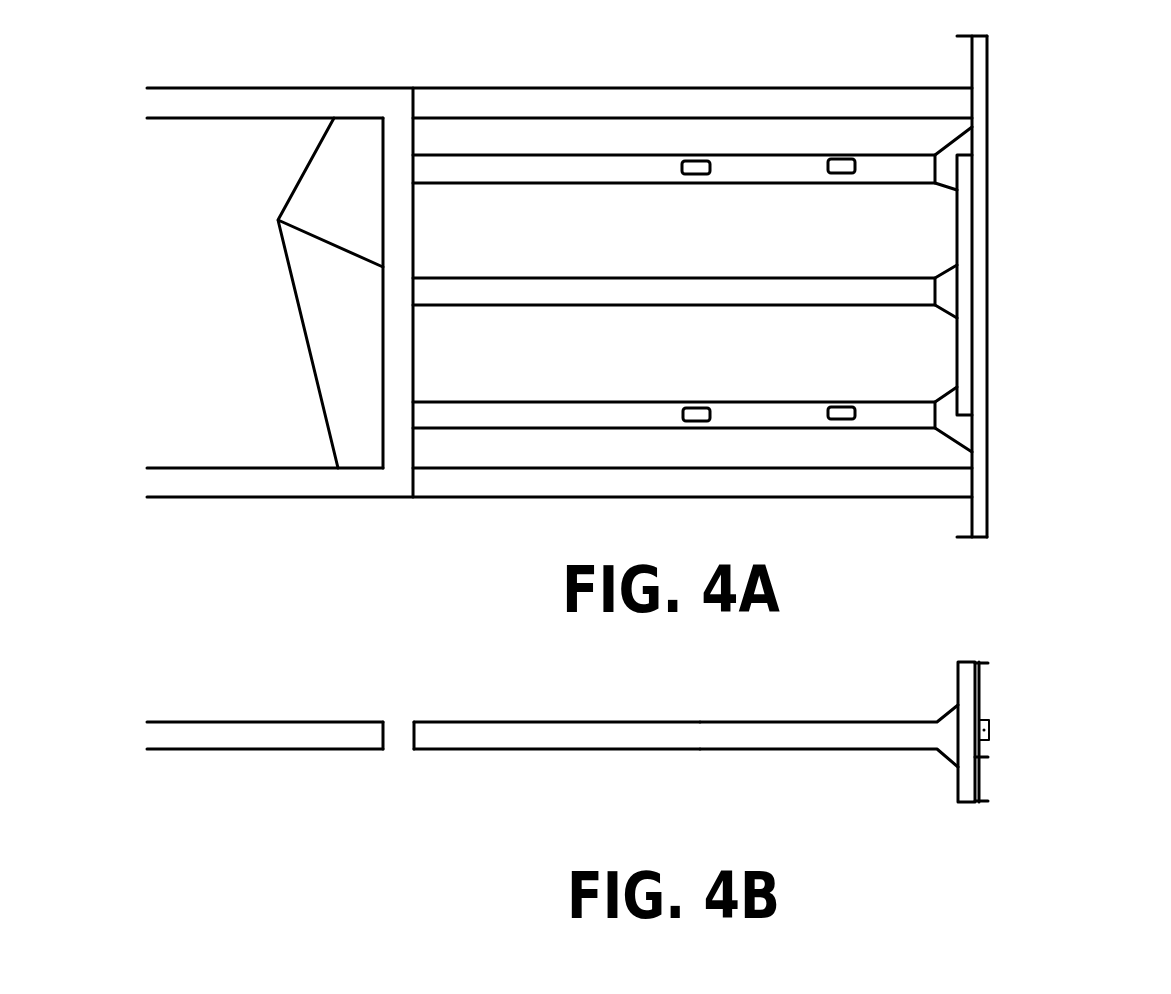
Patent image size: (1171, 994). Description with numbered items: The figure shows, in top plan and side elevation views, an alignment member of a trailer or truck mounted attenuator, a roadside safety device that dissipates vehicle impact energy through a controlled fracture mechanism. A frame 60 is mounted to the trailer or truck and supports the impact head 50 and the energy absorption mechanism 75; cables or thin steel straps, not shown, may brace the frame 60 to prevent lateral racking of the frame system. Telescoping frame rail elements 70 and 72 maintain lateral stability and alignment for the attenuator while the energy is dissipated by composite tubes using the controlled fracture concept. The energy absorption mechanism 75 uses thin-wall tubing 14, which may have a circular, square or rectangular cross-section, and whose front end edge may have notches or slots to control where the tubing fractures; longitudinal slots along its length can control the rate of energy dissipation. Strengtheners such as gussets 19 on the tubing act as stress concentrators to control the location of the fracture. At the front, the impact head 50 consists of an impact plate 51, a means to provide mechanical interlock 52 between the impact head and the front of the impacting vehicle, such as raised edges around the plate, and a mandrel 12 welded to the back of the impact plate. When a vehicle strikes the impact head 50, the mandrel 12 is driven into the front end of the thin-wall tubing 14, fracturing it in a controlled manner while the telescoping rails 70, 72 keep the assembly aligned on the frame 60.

In FIG. 4A, the mandrel 12 is at (953, 138).
In FIG. 4A, the thin-wall tubing 14 is at (602, 155).
In FIG. 4A, the gusset 19 is at (696, 175).
In FIG. 4A, the impact head 50 is at (990, 286).
In FIG. 4B, the impact head 50 is at (961, 712).
In FIG. 4A, the impact plate 51 is at (967, 230).
In FIG. 4B, the impact plate 51 is at (967, 778).
In FIG. 4A, the mechanical interlock means 52 is at (983, 125).
In FIG. 4B, the mechanical interlock means 52 is at (982, 707).
In FIG. 4A, the frame 60 is at (278, 220).
In FIG. 4B, the frame 60 is at (333, 698).
In FIG. 4A, the telescoping frame rail element 70 is at (447, 102).
In FIG. 4B, the telescoping frame rail element 70 is at (497, 737).
In FIG. 4A, the telescoping frame rail element 72 is at (285, 100).
In FIG. 4B, the telescoping frame rail element 72 is at (275, 740).
In FIG. 4A, the energy absorption mechanism 75 is at (505, 307).
In FIG. 4B, the energy absorption mechanism 75 is at (750, 708).